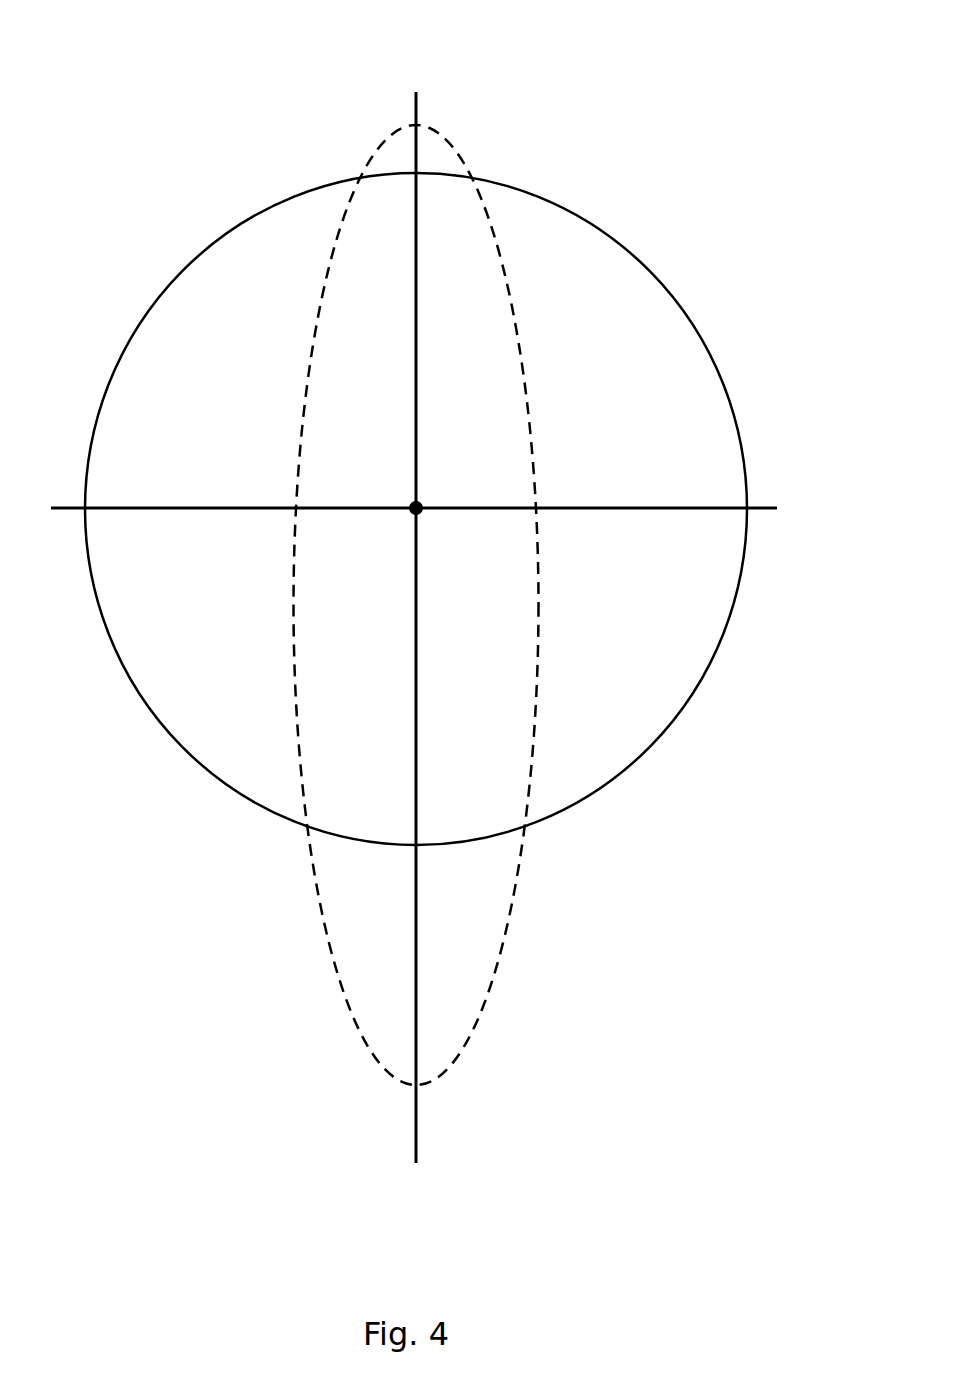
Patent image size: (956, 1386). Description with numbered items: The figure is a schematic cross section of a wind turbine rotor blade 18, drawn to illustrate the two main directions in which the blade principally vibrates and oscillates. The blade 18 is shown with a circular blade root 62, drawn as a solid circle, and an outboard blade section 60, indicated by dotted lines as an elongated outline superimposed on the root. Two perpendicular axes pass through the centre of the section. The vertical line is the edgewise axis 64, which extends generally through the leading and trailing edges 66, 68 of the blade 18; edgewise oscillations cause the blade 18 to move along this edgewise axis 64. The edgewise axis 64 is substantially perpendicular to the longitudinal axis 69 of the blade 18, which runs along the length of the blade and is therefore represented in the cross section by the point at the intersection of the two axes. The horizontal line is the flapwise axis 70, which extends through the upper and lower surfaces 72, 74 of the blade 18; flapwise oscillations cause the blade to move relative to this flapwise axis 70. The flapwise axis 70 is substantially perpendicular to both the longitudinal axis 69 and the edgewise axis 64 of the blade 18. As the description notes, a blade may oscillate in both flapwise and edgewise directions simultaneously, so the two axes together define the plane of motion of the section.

The rotor blade 18 is at (133, 152).
The outboard blade section 60 is at (492, 213).
The circular blade root 62 is at (612, 237).
The edgewise axis 64 is at (417, 100).
The leading edge 66 is at (385, 1126).
The trailing edge 68 is at (389, 110).
The longitudinal axis 69 is at (418, 500).
The flapwise axis 70 is at (777, 507).
The upper surface 72 is at (262, 445).
The lower surface 74 is at (572, 452).